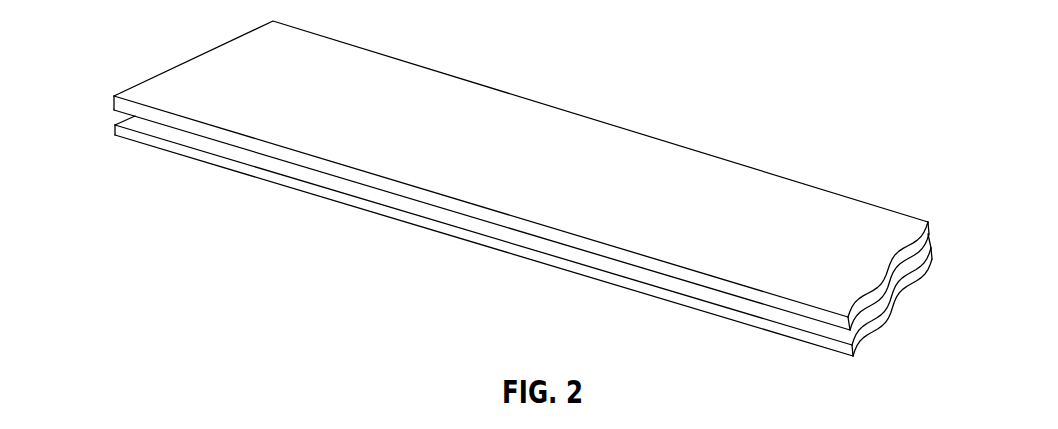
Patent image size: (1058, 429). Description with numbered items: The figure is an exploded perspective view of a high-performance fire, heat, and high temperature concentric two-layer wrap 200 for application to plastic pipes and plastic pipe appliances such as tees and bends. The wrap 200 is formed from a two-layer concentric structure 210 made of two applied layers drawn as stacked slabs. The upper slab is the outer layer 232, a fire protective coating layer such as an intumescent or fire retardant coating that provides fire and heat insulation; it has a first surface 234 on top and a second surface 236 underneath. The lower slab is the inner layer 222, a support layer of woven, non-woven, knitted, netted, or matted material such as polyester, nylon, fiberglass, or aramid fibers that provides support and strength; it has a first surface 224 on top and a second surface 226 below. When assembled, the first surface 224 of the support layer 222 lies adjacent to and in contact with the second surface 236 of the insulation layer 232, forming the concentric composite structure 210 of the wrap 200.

The concentric two-layer wrap 200 is at (741, 111).
The two-layer concentric structure 210 is at (101, 76).
The outer layer 232 is at (366, 180).
The first surface of outer layer 234 is at (265, 124).
The second surface of outer layer 236 is at (290, 163).
The inner layer 222 is at (673, 300).
The first surface of inner layer 224 is at (835, 338).
The second surface of inner layer 226 is at (752, 328).